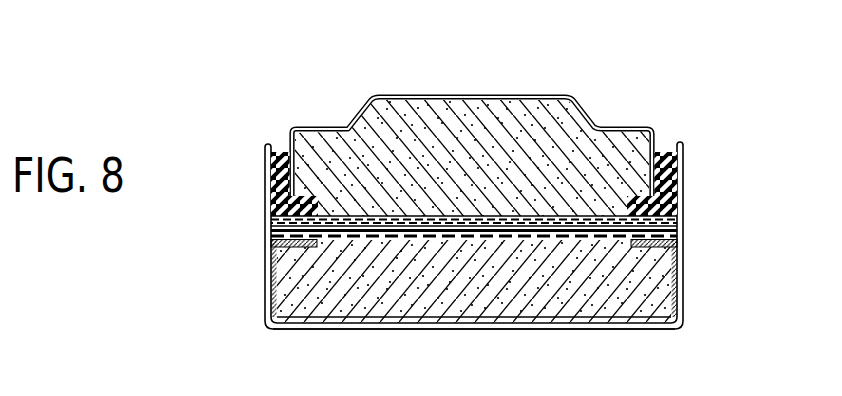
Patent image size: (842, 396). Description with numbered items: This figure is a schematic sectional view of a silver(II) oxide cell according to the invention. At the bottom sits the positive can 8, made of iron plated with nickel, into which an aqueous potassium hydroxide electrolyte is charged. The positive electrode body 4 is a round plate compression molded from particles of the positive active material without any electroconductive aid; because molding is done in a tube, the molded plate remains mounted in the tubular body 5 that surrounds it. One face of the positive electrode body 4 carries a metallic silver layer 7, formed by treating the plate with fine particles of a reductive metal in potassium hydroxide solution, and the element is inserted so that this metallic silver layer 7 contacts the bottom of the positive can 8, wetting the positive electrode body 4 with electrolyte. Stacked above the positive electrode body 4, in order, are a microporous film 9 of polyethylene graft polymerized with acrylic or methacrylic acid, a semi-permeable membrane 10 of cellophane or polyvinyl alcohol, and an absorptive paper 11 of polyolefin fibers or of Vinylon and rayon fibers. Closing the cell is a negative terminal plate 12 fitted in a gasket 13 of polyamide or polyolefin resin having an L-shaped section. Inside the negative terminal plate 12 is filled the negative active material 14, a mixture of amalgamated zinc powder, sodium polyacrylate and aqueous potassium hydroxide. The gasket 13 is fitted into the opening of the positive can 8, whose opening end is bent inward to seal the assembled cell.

The positive electrode body 4 is at (327, 300).
The tubular body 5 is at (685, 276).
The metallic silver layer 7 is at (383, 328).
The positive can 8 is at (441, 326).
The microporous film 9 is at (492, 257).
The semi-permeable membrane 10 is at (552, 257).
The absorptive paper 11 is at (612, 257).
The negative terminal plate 12 is at (318, 127).
The gasket 13 is at (684, 156).
The negative active material 14 is at (418, 126).